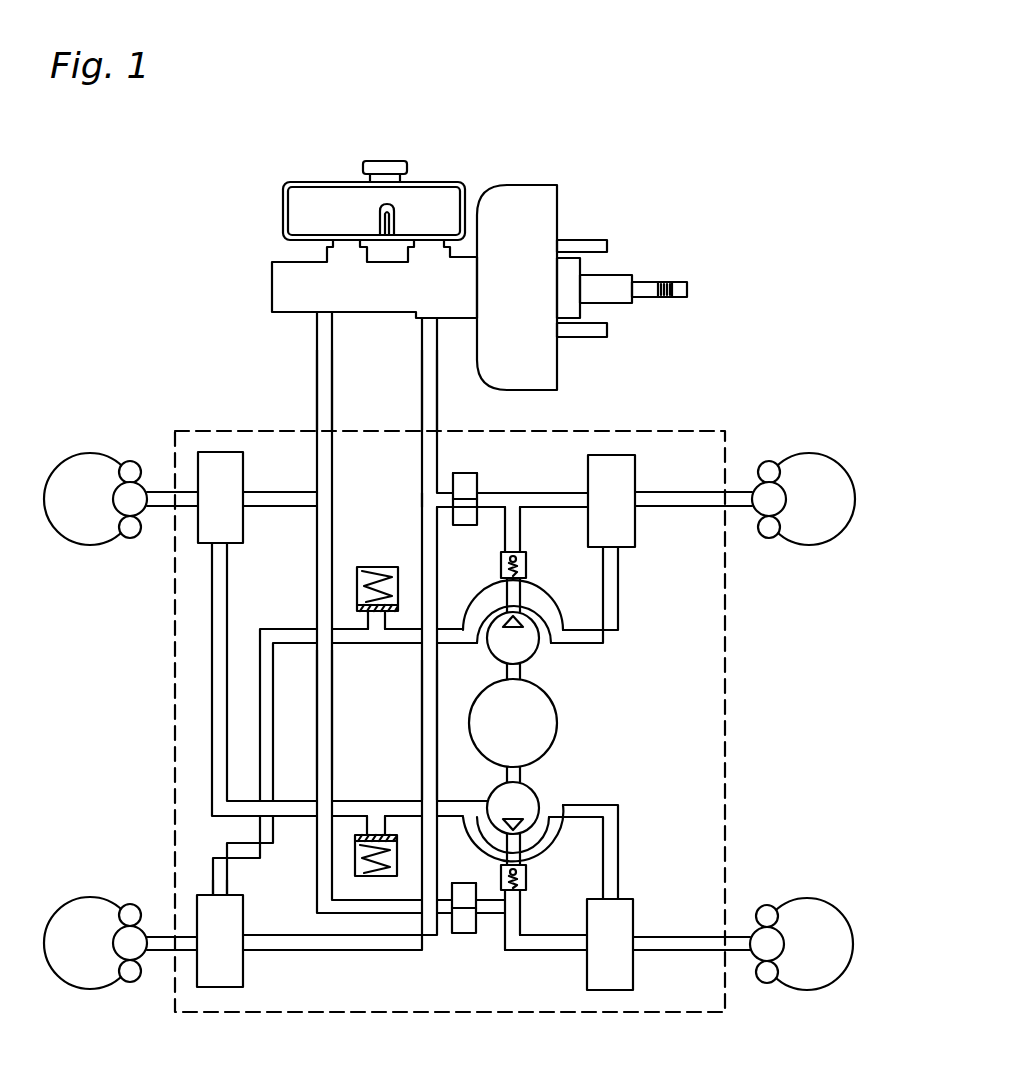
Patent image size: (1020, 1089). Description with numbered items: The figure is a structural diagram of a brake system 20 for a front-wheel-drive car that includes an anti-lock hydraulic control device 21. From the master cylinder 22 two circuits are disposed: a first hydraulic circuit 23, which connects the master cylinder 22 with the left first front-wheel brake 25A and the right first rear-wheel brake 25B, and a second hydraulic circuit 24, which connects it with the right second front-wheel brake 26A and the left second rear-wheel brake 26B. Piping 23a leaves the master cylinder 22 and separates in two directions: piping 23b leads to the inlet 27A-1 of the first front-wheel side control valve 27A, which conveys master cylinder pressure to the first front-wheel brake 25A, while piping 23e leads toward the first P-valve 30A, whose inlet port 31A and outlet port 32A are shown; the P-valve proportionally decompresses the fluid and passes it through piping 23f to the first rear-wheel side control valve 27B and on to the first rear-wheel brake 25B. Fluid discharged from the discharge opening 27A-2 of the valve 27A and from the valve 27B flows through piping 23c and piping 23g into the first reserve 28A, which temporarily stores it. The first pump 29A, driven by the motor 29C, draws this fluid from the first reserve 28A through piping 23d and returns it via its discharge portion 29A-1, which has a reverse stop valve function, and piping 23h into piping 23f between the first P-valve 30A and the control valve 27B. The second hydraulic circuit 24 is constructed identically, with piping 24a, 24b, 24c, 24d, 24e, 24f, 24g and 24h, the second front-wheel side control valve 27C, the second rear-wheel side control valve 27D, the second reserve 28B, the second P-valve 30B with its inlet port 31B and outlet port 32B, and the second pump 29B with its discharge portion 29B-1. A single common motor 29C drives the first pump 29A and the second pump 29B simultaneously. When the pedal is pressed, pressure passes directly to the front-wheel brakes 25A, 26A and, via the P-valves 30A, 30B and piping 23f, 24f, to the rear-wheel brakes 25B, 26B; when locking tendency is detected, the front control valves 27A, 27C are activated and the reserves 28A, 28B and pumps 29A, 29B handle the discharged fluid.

The brake system 20 is at (707, 145).
The anti-lock hydraulic control device 21 is at (655, 426).
The master cylinder 22 is at (268, 282).
The first hydraulic circuit 23 is at (438, 423).
The piping 23a is at (421, 452).
The piping 23b is at (420, 709).
The piping 23c is at (274, 726).
The piping (discharge) 23d is at (448, 645).
The piping 23e is at (440, 503).
The piping 23f is at (538, 497).
The piping 23g is at (619, 628).
The piping 23h is at (517, 530).
The second hydraulic circuit 24 is at (315, 403).
The piping 24a is at (333, 454).
The piping 24b is at (272, 508).
The piping 24c is at (229, 628).
The piping 24d is at (409, 792).
The piping 24e is at (333, 676).
The piping 24f is at (527, 951).
The piping 24g is at (619, 815).
The piping 24h is at (520, 896).
The first front-wheel brake 25A is at (97, 891).
The first rear-wheel brake 25B is at (809, 446).
The second front-wheel brake 26A is at (90, 446).
The second rear-wheel brake 26B is at (805, 891).
The first front-wheel side control valve 27A is at (267, 878).
The inlet 27A-1 is at (243, 946).
The discharge opening 27A-2 is at (213, 893).
The first rear-wheel side control valve 27B is at (641, 514).
The second front-wheel side control valve 27C is at (266, 455).
The second rear-wheel side control valve 27D is at (643, 914).
The first reserve 28A is at (381, 566).
The second reserve 28B is at (387, 882).
The first pump 29A is at (541, 652).
The discharge portion 29A-1 is at (526, 565).
The second pump 29B is at (540, 793).
The discharge portion 29B-1 is at (550, 885).
The motor 29C is at (545, 723).
The first P-valve 30A is at (465, 530).
The second P-valve 30B is at (446, 921).
The inlet port 31A is at (447, 486).
The inlet port 31B is at (462, 880).
The outlet port 32A is at (480, 489).
The outlet port 32B is at (481, 922).